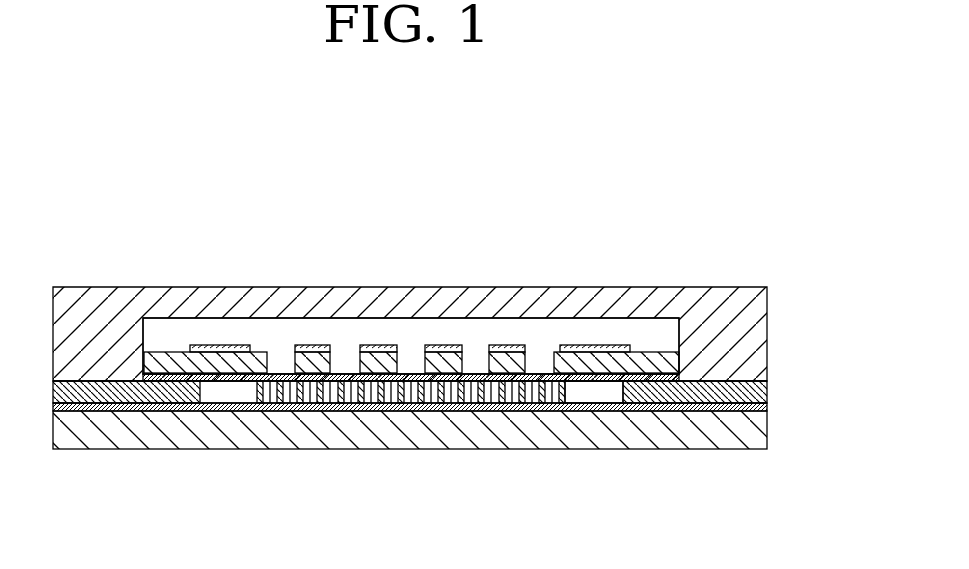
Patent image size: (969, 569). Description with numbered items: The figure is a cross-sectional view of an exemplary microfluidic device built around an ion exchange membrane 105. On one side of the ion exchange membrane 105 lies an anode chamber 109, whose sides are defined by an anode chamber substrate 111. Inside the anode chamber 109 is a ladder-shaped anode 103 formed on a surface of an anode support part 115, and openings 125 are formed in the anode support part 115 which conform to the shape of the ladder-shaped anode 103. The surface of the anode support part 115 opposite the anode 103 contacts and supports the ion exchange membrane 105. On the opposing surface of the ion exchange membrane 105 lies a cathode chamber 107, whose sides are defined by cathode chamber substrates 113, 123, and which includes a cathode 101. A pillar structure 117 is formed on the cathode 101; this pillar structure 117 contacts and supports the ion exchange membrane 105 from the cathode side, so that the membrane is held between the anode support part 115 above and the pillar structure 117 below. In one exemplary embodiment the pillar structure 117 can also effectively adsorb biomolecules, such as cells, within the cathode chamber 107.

The cathode 101 is at (767, 408).
The ladder-shaped anode 103 is at (253, 350).
The ion exchange membrane 105 is at (695, 380).
The cathode chamber 107 is at (590, 393).
The anode chamber 109 is at (412, 333).
The anode chamber substrate 111 is at (757, 309).
The cathode chamber substrate 113 is at (737, 433).
The anode support part 115 is at (170, 353).
The pillar structure 117 is at (258, 395).
The cathode chamber substrate 123 is at (103, 392).
The openings 125 is at (480, 357).